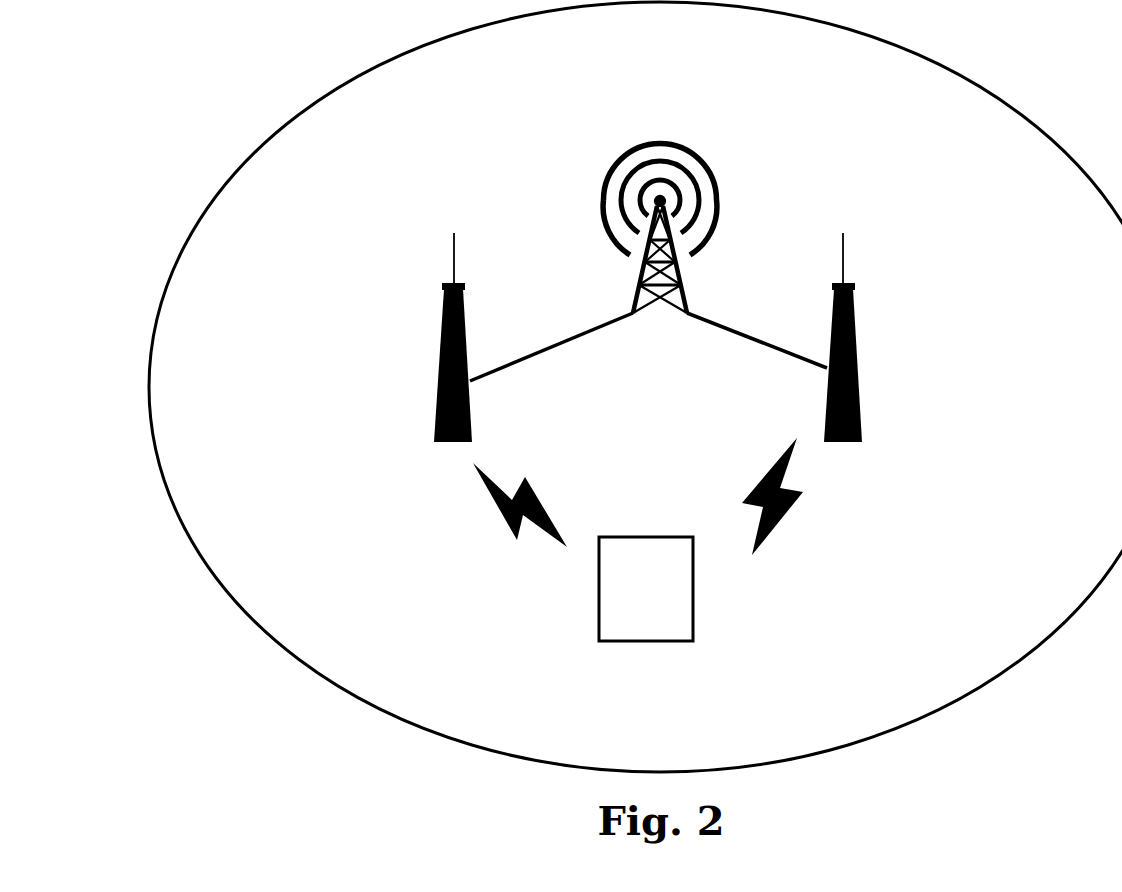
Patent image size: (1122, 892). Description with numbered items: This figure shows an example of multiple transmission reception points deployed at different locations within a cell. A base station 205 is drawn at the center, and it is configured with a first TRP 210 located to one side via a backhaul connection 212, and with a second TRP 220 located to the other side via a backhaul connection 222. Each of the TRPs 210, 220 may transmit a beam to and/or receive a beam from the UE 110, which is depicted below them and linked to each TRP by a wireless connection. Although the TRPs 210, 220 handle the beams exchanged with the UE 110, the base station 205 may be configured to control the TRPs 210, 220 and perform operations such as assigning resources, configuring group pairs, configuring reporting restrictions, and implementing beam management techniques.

The base station 205 is at (660, 258).
The first TRP 210 is at (429, 337).
The second TRP 220 is at (869, 337).
The backhaul connection 212 is at (551, 347).
The backhaul connection 222 is at (757, 340).
The UE 110 is at (646, 589).